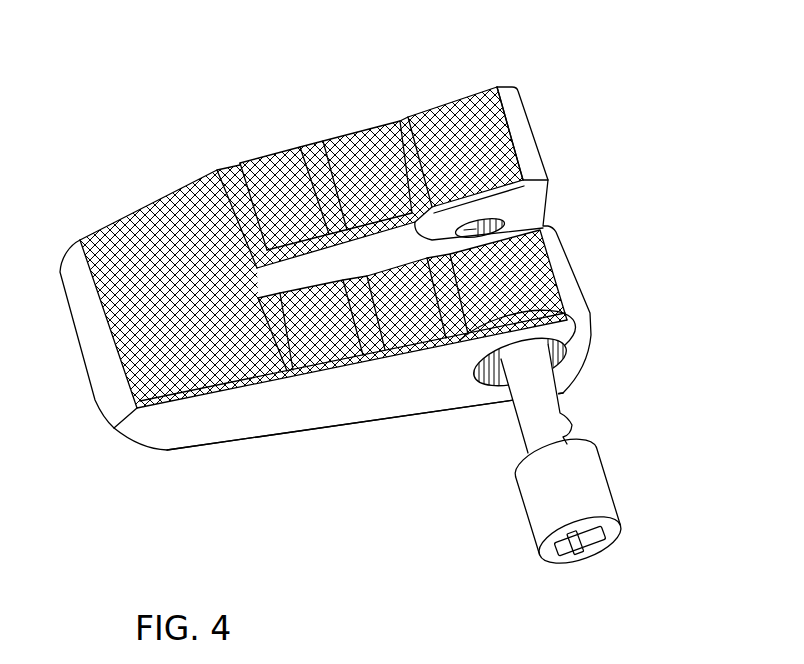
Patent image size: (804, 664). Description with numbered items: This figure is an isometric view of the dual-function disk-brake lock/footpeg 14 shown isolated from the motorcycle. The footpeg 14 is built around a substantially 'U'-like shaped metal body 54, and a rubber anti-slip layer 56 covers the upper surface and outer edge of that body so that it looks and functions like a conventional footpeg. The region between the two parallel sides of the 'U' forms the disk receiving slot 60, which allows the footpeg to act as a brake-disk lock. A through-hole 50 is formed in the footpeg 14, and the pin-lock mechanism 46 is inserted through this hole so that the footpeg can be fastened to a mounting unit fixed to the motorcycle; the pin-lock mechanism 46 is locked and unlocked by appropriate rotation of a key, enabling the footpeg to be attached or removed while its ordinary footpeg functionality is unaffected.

The footpeg 14 is at (205, 112).
The pin-lock mechanism 46 is at (577, 487).
The through-hole 50 is at (406, 117).
The metal body 54 is at (340, 390).
The rubber anti-slip layer 56 is at (143, 190).
The disk receiving slot 60 is at (547, 202).